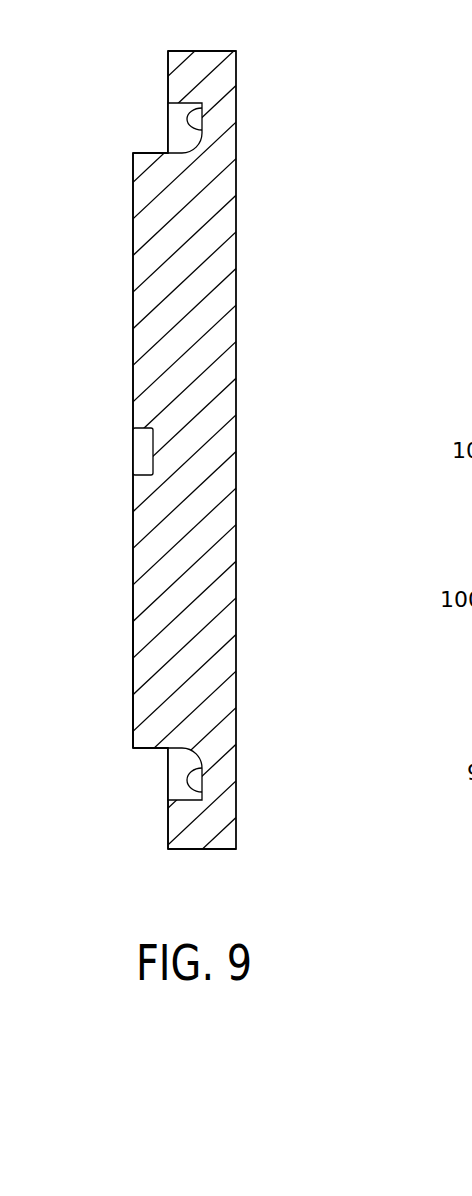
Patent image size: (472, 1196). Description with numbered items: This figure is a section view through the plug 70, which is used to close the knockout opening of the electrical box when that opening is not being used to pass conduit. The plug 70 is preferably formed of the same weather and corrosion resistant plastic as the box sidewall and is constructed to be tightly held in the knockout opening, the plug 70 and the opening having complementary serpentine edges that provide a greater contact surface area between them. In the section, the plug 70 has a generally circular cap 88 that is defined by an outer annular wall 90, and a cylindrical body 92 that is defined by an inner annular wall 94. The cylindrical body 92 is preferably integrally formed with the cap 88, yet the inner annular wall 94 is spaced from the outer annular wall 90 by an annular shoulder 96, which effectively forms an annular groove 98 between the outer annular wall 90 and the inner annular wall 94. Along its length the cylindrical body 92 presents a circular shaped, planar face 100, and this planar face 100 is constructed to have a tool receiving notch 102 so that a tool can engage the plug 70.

The plug 70 is at (325, 171).
The cap 88 is at (249, 530).
The outer annular wall 90 is at (168, 68).
The cylindrical body 92 is at (86, 664).
The inner annular wall 94 is at (155, 152).
The annular shoulder 96 is at (187, 126).
The annular groove 98 is at (172, 119).
The planar face 100 is at (133, 612).
The tool receiving notch 102 is at (153, 449).